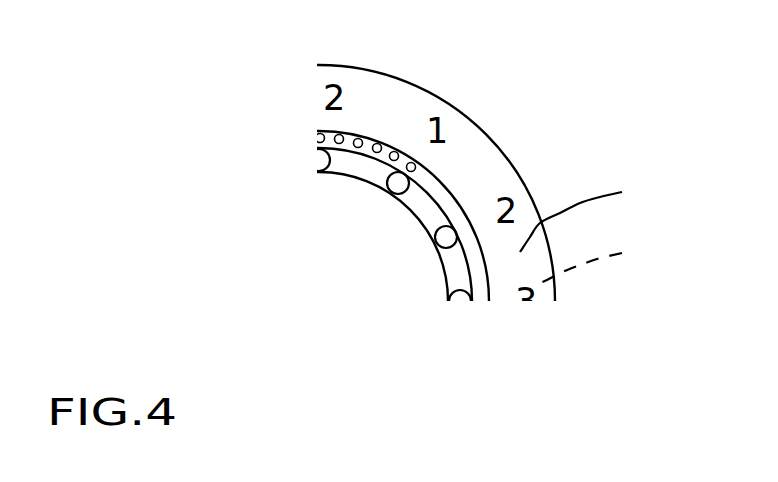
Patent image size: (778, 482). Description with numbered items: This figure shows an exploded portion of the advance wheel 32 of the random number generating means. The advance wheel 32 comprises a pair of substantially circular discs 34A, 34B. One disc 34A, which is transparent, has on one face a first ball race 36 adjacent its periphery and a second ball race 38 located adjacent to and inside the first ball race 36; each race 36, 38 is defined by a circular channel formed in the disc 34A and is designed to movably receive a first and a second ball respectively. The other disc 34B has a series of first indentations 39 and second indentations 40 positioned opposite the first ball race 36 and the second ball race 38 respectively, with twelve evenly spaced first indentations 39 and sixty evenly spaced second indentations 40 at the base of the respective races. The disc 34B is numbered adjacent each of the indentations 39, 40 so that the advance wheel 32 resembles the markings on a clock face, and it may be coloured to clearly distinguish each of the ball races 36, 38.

The advance wheel 32 is at (297, 248).
The disc 34A is at (596, 214).
The disc 34B is at (602, 263).
The first ball race 36 is at (446, 204).
The second ball race 38 is at (433, 217).
The first indentations 39 is at (377, 148).
The second indentations 40 is at (401, 185).